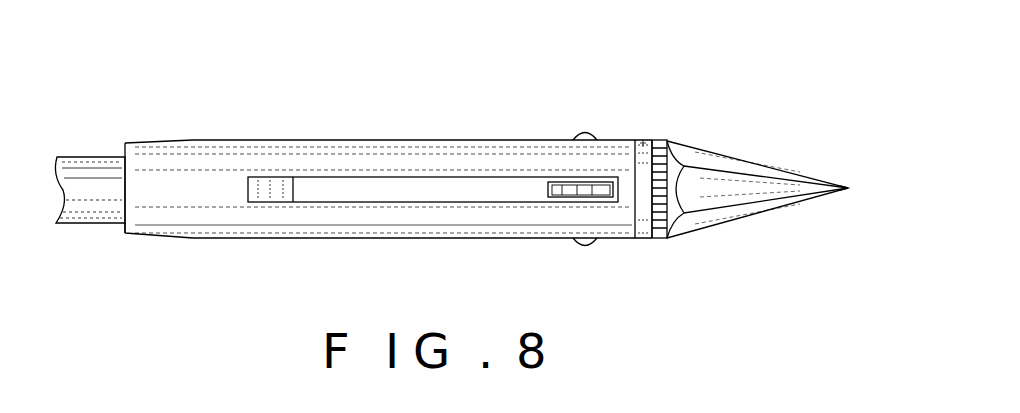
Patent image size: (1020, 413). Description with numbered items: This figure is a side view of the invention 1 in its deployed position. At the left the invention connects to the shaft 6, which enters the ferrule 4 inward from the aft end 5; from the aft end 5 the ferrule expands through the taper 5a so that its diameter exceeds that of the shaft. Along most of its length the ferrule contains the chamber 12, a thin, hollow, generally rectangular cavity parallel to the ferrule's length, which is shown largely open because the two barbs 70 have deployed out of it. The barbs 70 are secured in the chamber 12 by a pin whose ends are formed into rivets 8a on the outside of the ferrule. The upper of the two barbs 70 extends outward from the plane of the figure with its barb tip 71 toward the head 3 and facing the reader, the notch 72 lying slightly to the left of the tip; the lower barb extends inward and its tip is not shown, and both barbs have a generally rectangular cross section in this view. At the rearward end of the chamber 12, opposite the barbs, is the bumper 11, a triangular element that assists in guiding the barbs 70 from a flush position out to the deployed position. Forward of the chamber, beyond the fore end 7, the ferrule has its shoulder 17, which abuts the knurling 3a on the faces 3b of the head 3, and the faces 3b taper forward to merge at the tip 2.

The writing instrument 1 is at (222, 72).
The tip 2 is at (848, 188).
The head 3 is at (772, 165).
The knurling portion 3a is at (660, 145).
The faces 3b is at (715, 160).
The ferrule 4 is at (373, 138).
The aft end 5 is at (112, 233).
The taper 5a is at (163, 143).
The shaft 6 is at (93, 175).
The fore end 7 is at (608, 140).
The rivets 8a is at (585, 133).
The bumper 11 is at (275, 190).
The chamber 12 is at (403, 187).
The shoulder 17 is at (642, 145).
The barbs 70 is at (573, 187).
The barb tip 71 is at (635, 238).
The notch 72 is at (553, 188).